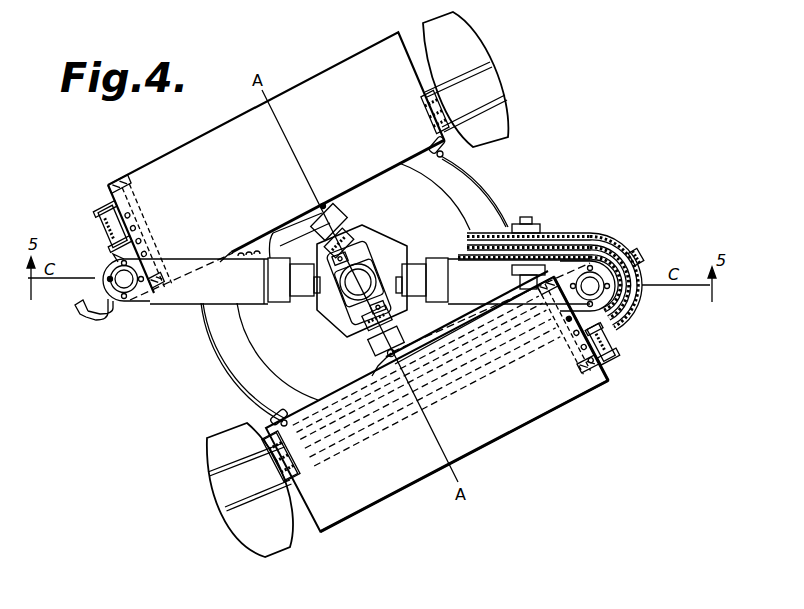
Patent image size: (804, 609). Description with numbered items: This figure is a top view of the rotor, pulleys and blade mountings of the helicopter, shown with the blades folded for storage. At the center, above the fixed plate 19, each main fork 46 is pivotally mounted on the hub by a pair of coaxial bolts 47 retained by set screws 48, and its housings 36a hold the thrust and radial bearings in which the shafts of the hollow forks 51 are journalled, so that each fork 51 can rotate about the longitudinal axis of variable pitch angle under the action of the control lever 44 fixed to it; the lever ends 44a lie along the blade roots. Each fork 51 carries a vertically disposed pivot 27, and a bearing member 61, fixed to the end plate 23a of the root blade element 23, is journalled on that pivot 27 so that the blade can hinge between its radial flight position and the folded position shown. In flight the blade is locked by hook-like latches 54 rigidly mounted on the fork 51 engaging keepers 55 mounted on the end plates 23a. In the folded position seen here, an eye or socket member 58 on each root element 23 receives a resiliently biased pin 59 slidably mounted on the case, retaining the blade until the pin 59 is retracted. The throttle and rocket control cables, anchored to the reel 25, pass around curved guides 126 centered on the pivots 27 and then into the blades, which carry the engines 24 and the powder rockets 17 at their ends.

The powder rockets 17 is at (284, 486).
The fixed plate 19 is at (360, 280).
The root blade element 23 is at (209, 136).
The end plate 23a is at (126, 182).
The engine 24 is at (216, 446).
The reel 25 is at (578, 231).
The pivot 27 is at (113, 284).
The housing 36a is at (307, 298).
The control lever 44 is at (278, 245).
The rail pivot end 44a is at (326, 203).
The main fork 46 is at (343, 330).
The coaxial bolt 47 is at (345, 222).
The set screw 48 is at (352, 252).
The hollow fork 51 is at (200, 288).
The latch 54 is at (642, 253).
The keeper 55 is at (103, 224).
The eye or socket member 58 is at (433, 146).
The pin 59 is at (442, 160).
The bearing member 61 is at (116, 253).
The guide 126 is at (611, 232).